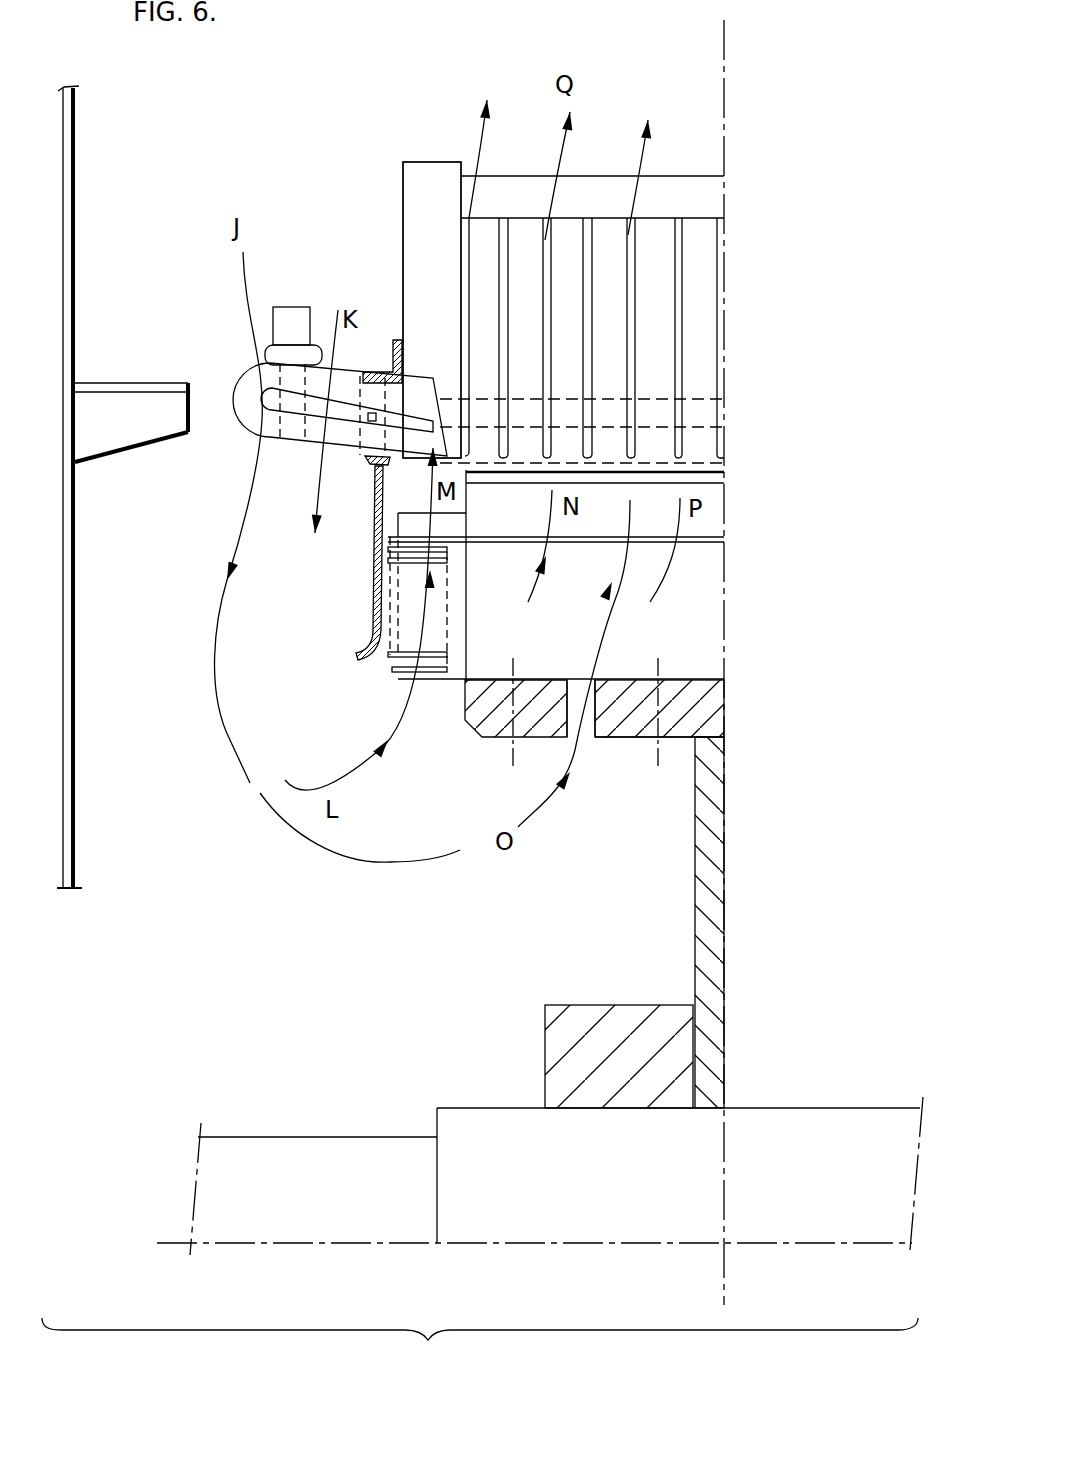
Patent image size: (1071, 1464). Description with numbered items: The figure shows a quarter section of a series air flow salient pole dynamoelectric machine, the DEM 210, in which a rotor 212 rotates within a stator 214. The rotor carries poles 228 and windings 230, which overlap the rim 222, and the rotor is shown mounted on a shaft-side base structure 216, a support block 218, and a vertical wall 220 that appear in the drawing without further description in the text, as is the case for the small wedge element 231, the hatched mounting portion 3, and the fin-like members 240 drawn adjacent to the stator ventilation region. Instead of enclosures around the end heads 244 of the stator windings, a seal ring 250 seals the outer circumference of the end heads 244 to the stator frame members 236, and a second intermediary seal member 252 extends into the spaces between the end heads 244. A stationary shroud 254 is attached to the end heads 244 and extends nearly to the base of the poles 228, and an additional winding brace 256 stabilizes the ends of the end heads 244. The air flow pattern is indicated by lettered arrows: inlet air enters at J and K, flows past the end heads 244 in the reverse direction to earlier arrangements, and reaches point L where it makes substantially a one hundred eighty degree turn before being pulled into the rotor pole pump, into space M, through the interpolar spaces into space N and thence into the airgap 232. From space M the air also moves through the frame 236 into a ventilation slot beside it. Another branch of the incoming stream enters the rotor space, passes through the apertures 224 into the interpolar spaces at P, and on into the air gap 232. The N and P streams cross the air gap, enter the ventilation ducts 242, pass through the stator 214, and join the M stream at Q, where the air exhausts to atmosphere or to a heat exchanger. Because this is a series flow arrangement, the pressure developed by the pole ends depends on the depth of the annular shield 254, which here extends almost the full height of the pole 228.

The mounting plate portion 3 is at (632, 740).
The DEM 210 is at (395, 953).
The rotor 212 is at (733, 915).
The stator 214 is at (388, 216).
The base 216 is at (818, 1108).
The support block 218 is at (612, 1004).
The vertical wall 220 is at (724, 800).
The rim 222 is at (490, 738).
The apertures 224 is at (587, 740).
The poles 228 is at (478, 663).
The windings 230 is at (407, 632).
The wedge 231 is at (392, 470).
The airgap 232 is at (710, 463).
The stator frame members 236 is at (415, 278).
The fins 240 is at (618, 212).
The ventilation ducts 242 is at (682, 218).
The end heads 244 is at (245, 382).
The seal ring 250 is at (393, 352).
The intermediary seal member 252 is at (377, 413).
The stationary shroud 254 is at (372, 596).
The winding brace 256 is at (292, 308).